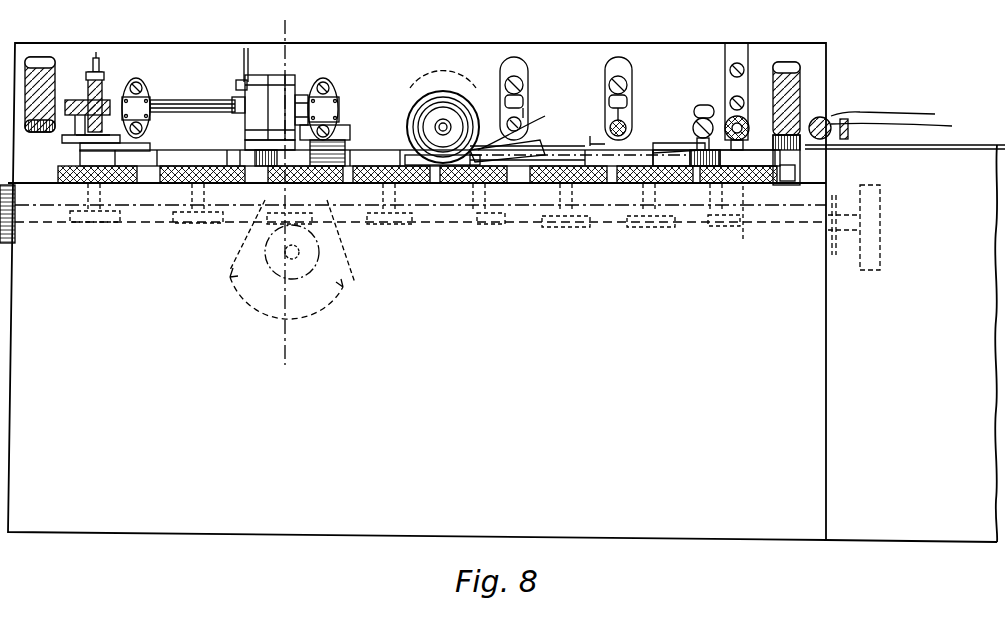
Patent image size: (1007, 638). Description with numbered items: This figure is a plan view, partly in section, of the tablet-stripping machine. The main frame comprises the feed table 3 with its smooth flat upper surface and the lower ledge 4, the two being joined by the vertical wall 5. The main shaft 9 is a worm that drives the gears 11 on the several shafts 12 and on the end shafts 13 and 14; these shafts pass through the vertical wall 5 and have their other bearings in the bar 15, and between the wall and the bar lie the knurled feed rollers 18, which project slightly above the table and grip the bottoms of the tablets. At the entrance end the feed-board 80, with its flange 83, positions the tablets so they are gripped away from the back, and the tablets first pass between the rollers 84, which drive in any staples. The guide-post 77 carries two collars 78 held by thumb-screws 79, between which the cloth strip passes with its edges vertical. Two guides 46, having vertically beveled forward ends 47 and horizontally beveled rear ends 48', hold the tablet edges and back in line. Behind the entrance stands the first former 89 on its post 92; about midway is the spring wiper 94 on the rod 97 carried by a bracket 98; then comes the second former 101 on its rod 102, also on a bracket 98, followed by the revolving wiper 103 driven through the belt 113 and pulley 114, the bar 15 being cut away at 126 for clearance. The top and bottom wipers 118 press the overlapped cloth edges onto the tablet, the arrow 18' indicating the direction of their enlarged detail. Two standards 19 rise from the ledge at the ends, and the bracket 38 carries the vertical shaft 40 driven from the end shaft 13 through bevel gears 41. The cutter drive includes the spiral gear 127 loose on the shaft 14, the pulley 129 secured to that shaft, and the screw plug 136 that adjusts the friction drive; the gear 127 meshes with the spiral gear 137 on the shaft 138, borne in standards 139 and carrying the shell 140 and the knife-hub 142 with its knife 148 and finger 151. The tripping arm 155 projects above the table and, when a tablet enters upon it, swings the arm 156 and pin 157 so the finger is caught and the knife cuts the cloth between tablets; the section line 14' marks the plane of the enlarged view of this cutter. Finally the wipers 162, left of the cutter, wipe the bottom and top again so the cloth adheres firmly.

The feed table 3 is at (498, 292).
The ledge 4 is at (693, 53).
The vertical wall 5 is at (824, 183).
The main shaft 9 is at (880, 211).
The gears 11 is at (762, 225).
The shafts 12 is at (488, 196).
The end shaft 13 is at (745, 215).
The end shaft 14 is at (107, 203).
The section line 14' is at (292, 206).
The bar 15 is at (704, 200).
The support 18 is at (340, 235).
The section line 18' is at (343, 38).
The standards 19 is at (37, 55).
The bracket 38 is at (730, 51).
The vertical shaft 40 is at (750, 126).
The bevel gears 41 is at (790, 120).
The guides 46 is at (575, 151).
The vertically beveled forward ends 47 is at (678, 146).
The horizontally beveled rear ends 48' is at (530, 128).
The guide-post 77 is at (894, 114).
The collars 78 is at (903, 125).
The thumb-screws 79 is at (855, 127).
The feed-board 80 is at (914, 557).
The flange 83 is at (907, 151).
The rollers 84 is at (745, 185).
The first former 89 is at (661, 146).
The post 92 is at (692, 123).
The spring wiper 94 is at (591, 144).
The rod 97 is at (626, 127).
The bracket 98 is at (517, 59).
The second former 101 is at (492, 138).
The rod 102 is at (519, 124).
The wheel 103 is at (421, 102).
The belt 113 is at (378, 250).
The pulley 114 is at (340, 283).
The top and bottom wipers 118 is at (336, 133).
The cut-away 126 is at (433, 185).
The spiral gear 127 is at (66, 104).
The pulley 129 is at (56, 146).
The screw plug 136 is at (96, 56).
The spiral gear 137 is at (103, 80).
The shaft 138 is at (198, 100).
The standards 139 is at (141, 84).
The shell 140 is at (299, 93).
The knife-hub 142 is at (264, 70).
The knife 148 is at (243, 62).
The finger 151 is at (307, 185).
The tripping arm 155 is at (243, 183).
The arm 156 is at (270, 185).
The pin 157 is at (340, 186).
The wipers 162 is at (157, 183).